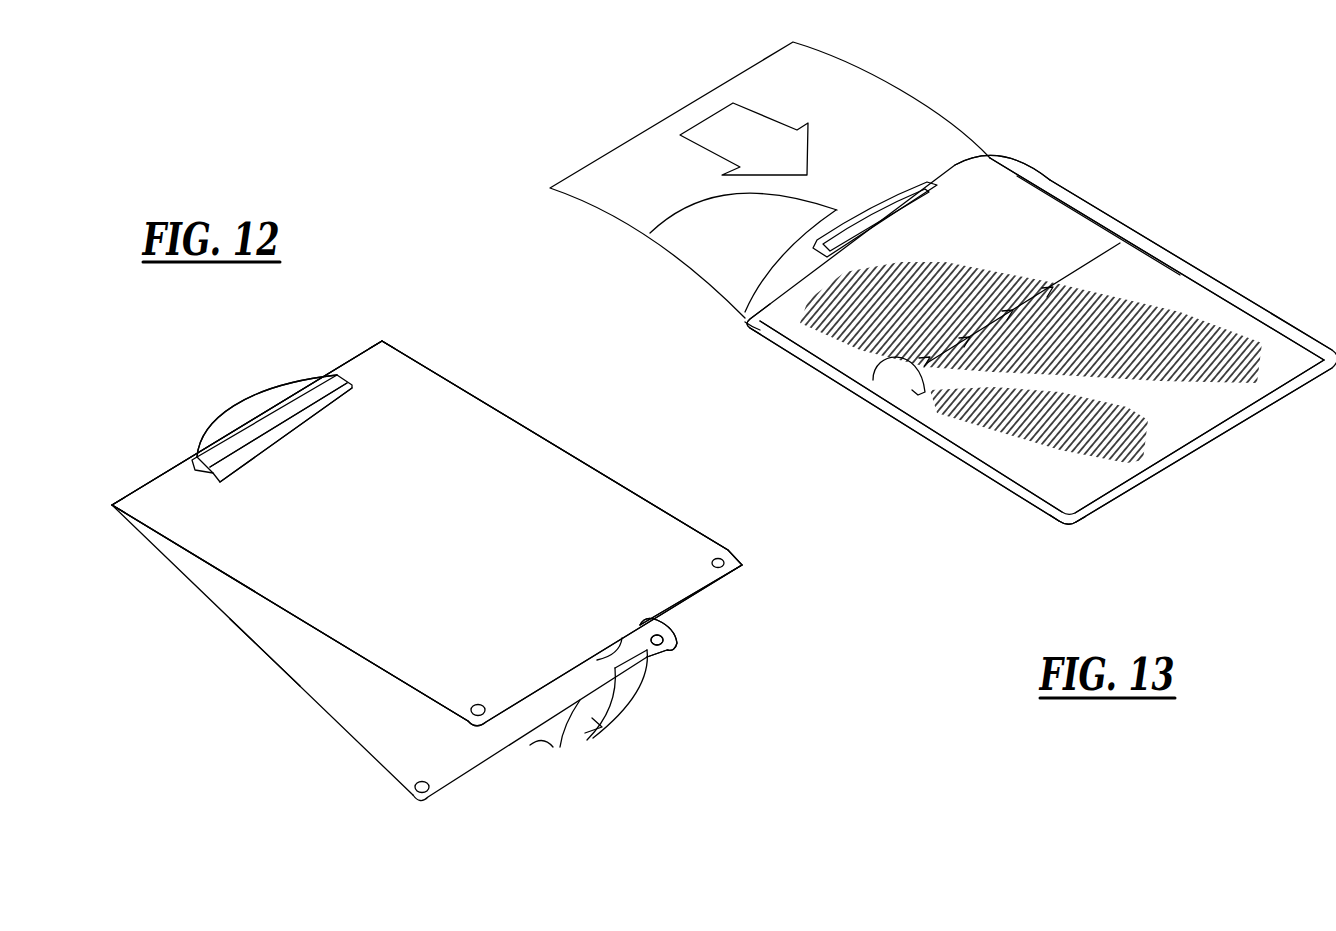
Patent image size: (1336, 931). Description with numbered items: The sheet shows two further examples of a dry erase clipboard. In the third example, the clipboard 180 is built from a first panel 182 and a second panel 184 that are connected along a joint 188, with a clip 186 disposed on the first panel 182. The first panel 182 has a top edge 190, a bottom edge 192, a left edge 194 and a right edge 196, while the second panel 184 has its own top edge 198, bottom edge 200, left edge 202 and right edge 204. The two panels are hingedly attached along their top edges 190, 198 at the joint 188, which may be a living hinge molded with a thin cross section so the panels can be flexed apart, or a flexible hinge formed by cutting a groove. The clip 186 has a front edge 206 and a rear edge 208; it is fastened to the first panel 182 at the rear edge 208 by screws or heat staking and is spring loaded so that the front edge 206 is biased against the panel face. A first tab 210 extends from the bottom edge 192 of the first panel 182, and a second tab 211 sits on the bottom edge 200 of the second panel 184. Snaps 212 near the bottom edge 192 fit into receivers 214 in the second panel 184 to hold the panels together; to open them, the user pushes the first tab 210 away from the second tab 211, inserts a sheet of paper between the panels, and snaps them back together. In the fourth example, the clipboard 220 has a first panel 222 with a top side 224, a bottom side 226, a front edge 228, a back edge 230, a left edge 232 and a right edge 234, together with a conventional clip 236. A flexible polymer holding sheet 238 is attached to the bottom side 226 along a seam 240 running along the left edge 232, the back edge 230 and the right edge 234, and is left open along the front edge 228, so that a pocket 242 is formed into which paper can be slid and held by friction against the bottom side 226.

In FIG. 12, the clipboard 180 is at (224, 362).
In FIG. 12, the first panel 182 is at (585, 465).
In FIG. 12, the second panel 184 is at (213, 612).
In FIG. 12, the clip 186 is at (218, 422).
In FIG. 12, the joint 188 is at (124, 497).
In FIG. 12, the top edge 190 is at (360, 343).
In FIG. 12, the bottom edge 192 is at (727, 577).
In FIG. 12, the left edge 194 is at (247, 585).
In FIG. 12, the right edge 196 is at (477, 396).
In FIG. 12, the top edge 198 is at (110, 507).
In FIG. 12, the bottom edge 200 is at (487, 760).
In FIG. 12, the left edge 202 is at (263, 662).
In FIG. 12, the right edge 204 is at (677, 628).
In FIG. 12, the front edge 206 is at (260, 453).
In FIG. 12, the rear edge 208 is at (259, 391).
In FIG. 12, the first tab 210 is at (622, 638).
In FIG. 12, the second tab 211 is at (543, 732).
In FIG. 12, the snaps 212 is at (730, 551).
In FIG. 12, the receivers 214 is at (673, 647).
In FIG. 13, the clipboard 220 is at (1026, 96).
In FIG. 13, the first panel 222 is at (740, 319).
In FIG. 13, the top side 224 is at (873, 381).
In FIG. 13, the bottom side 226 is at (983, 477).
In FIG. 13, the front edge 228 is at (745, 318).
In FIG. 13, the back edge 230 is at (1267, 408).
In FIG. 13, the left edge 232 is at (822, 387).
In FIG. 13, the right edge 234 is at (1133, 232).
In FIG. 13, the clip 236 is at (653, 226).
In FIG. 13, the holding sheet 238 is at (1093, 503).
In FIG. 13, the seam 240 is at (1173, 460).
In FIG. 13, the pocket 242 is at (1004, 155).